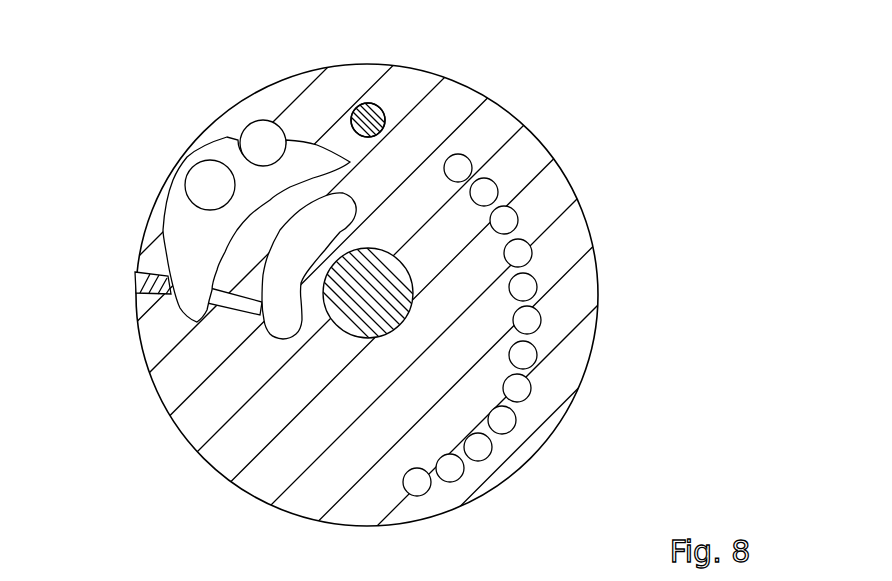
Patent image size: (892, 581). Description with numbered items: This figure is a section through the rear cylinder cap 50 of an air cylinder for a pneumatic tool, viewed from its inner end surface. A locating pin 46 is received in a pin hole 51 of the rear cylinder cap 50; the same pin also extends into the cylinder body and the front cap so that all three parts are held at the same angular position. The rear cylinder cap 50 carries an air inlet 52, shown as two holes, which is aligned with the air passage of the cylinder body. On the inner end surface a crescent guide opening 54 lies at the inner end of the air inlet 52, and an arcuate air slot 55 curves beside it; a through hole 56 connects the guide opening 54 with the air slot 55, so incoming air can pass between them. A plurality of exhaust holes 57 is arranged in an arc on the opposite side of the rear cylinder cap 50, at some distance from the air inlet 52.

The locating pin 46 is at (378, 108).
The rear cylinder cap 50 is at (557, 252).
The pin hole 51 is at (386, 121).
The air inlet 52 is at (263, 143).
The crescent guide opening 54 is at (182, 236).
The arcuate air slot 55 is at (279, 328).
The through hole 56 is at (245, 305).
The exhaust holes 57 is at (503, 422).